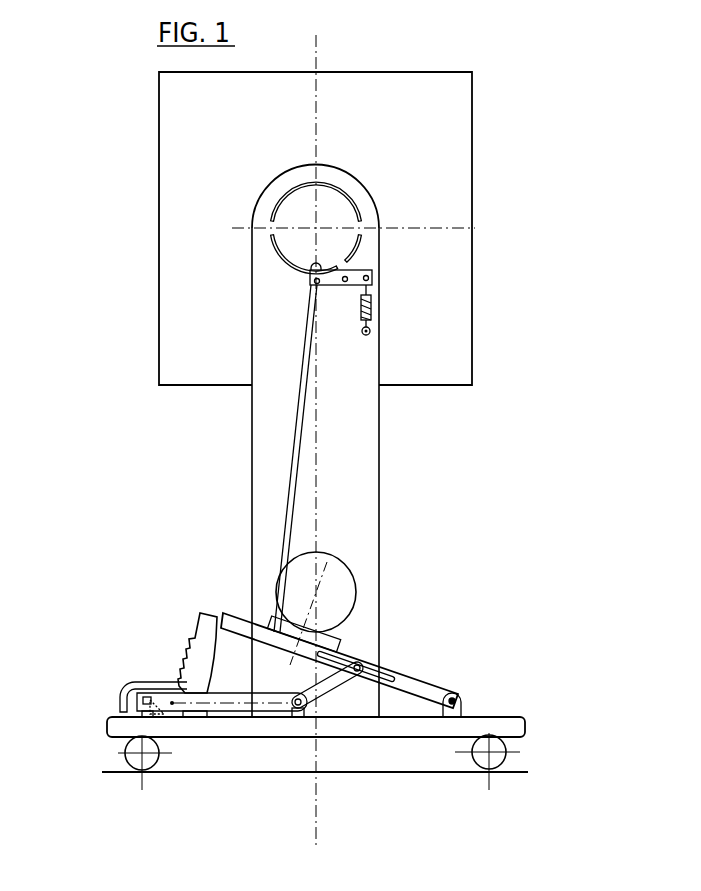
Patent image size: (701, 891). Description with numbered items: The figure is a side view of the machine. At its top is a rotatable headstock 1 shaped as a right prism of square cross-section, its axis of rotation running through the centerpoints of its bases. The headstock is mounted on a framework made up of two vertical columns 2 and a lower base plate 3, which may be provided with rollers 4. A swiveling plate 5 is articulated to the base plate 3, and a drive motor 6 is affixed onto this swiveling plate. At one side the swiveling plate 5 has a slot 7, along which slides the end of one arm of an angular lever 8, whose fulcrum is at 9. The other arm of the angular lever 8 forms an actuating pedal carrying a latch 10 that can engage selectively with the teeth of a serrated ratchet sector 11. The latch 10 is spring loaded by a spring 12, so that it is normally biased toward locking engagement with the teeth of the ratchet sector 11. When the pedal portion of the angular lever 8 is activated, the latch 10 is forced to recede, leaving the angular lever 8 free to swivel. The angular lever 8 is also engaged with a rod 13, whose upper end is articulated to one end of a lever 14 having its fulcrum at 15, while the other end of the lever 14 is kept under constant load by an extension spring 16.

The rotatable headstock 1 is at (433, 91).
The vertical columns 2 is at (364, 464).
The lower base plate 3 is at (384, 727).
The rollers 4 is at (483, 755).
The swiveling plate 5 is at (438, 688).
The drive motor 6 is at (342, 582).
The slot 7 is at (390, 671).
The angular lever 8 is at (235, 703).
The fulcrum 9 is at (299, 707).
The latch 10 is at (125, 685).
The serrated ratchet sector 11 is at (188, 660).
The spring 12 is at (147, 706).
The rod 13 is at (293, 458).
The lever 14 is at (373, 273).
The fulcrum 15 is at (345, 270).
The extension spring 16 is at (378, 308).